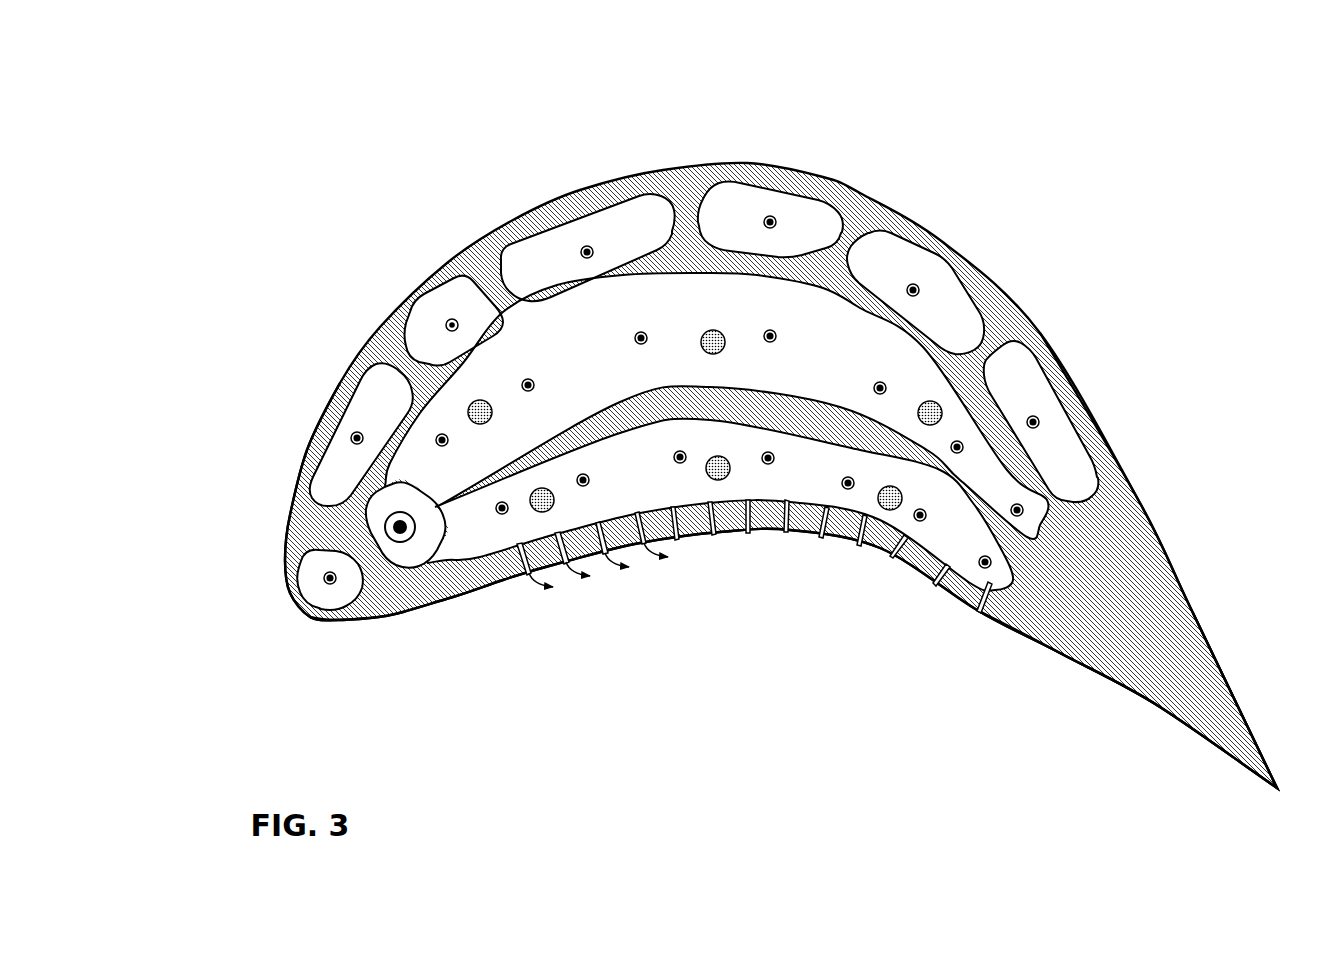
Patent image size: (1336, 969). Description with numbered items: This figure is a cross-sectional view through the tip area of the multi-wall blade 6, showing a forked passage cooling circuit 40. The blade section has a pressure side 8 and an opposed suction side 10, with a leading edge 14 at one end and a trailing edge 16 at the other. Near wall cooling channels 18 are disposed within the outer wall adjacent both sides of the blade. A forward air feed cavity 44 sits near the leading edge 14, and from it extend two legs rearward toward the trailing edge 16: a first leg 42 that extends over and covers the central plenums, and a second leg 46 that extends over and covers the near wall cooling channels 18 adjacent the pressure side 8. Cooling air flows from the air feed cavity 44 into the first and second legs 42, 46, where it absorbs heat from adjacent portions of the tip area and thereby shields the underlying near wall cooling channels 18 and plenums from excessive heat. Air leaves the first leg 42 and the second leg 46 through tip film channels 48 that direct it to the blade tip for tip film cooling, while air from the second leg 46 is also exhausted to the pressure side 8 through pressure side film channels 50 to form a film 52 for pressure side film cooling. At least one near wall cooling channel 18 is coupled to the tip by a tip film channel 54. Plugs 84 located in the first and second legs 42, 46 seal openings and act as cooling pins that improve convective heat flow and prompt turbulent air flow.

The multi-wall blade 6 is at (1060, 112).
The pressure side 8 is at (652, 628).
The suction side 10 is at (727, 110).
The leading edge 14 is at (272, 626).
The trailing edge 16 is at (1247, 800).
The near wall cooling channels 18 is at (557, 210).
The forked passage cooling circuit 40 is at (690, 265).
The first leg 42 is at (691, 314).
The air feed cavity 44 is at (368, 556).
The second leg 46 is at (699, 450).
The tip film channel 48 is at (638, 345).
The pressure side film channel 50 is at (747, 533).
The film 52 is at (564, 591).
The tip film channel 54 is at (452, 318).
The plugs 84 is at (721, 352).